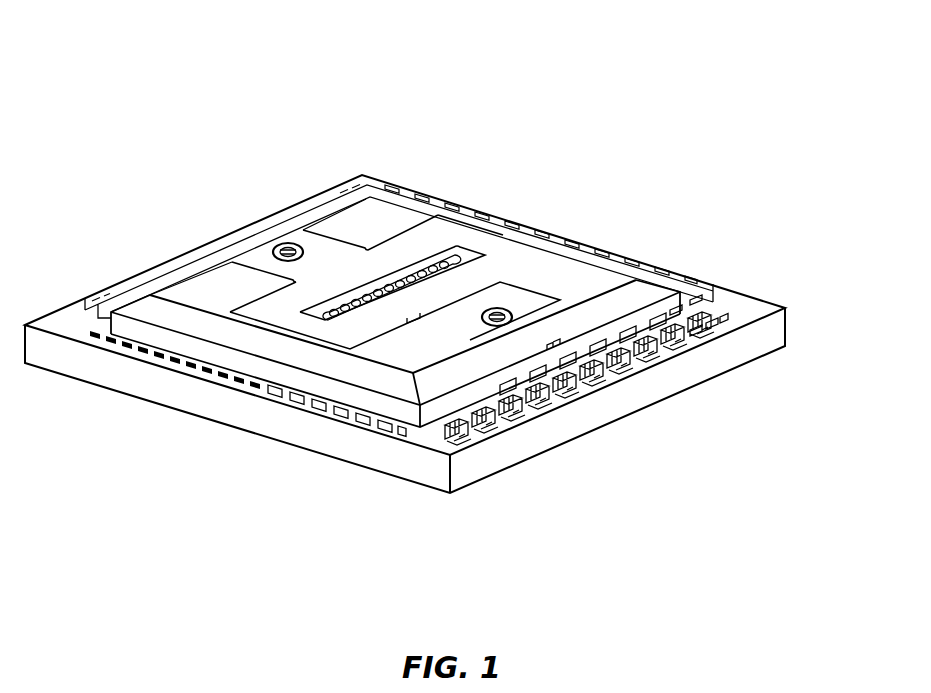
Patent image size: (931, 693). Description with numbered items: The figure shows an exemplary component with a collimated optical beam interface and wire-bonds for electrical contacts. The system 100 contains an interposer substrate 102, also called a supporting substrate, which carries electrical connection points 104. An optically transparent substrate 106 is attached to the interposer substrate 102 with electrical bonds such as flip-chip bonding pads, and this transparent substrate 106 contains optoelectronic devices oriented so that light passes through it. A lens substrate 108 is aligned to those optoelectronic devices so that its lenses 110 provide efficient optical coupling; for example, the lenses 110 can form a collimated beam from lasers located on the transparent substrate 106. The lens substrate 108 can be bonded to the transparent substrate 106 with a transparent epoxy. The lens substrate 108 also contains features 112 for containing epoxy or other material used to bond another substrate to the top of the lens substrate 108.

The system 100 is at (184, 86).
The interposer substrate 102 is at (227, 405).
The electrical connection points 104 is at (708, 284).
The optically transparent substrate 106 is at (350, 393).
The lens substrate 108 is at (390, 380).
The lenses 110 is at (478, 242).
The features 112 is at (368, 226).